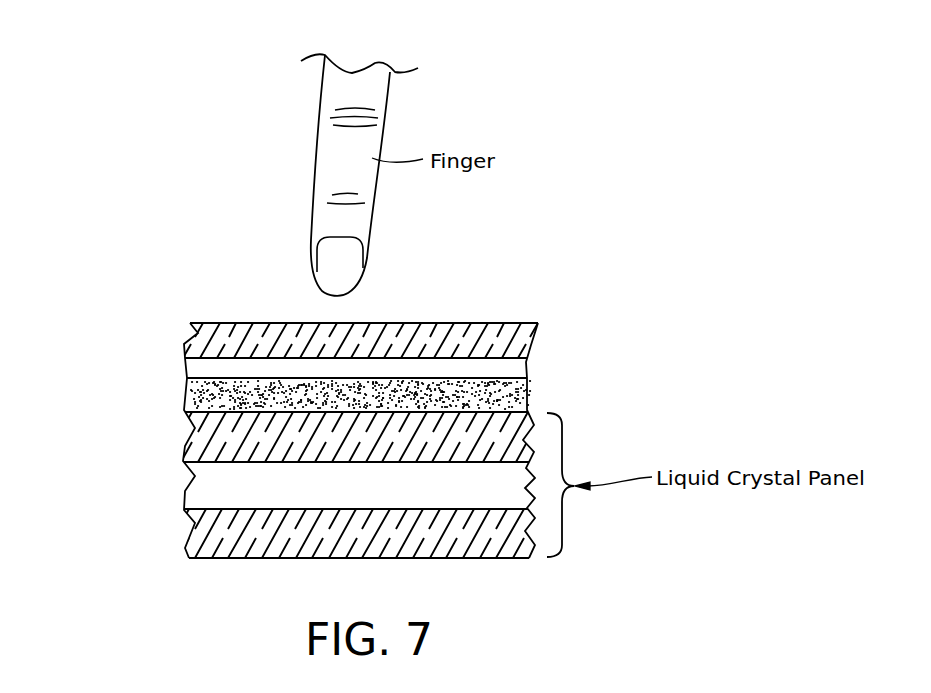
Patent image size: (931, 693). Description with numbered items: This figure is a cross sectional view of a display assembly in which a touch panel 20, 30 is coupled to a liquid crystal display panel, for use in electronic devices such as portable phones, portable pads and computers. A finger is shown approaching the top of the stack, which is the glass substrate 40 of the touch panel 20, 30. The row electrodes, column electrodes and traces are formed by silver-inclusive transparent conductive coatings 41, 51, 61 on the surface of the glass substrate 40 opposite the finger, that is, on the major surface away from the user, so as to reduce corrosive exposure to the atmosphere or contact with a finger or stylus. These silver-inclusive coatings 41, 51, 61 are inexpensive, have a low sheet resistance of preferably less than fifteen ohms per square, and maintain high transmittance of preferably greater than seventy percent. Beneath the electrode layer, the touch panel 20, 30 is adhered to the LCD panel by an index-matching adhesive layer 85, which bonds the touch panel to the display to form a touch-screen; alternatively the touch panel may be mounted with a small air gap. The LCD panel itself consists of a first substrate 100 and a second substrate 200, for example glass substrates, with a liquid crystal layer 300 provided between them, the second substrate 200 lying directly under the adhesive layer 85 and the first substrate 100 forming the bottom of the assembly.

The glass substrate 40 is at (208, 342).
The silver-inclusive TCC 41 is at (281, 366).
The silver-inclusive TCC 51 is at (281, 366).
The silver-inclusive TCC 61 is at (200, 372).
The index-matching adhesive layer 85 is at (393, 395).
The touch panel 20 is at (376, 337).
The touch panel 30 is at (376, 337).
The second substrate 200 is at (207, 442).
The liquid crystal layer 300 is at (203, 486).
The first substrate 100 is at (200, 528).